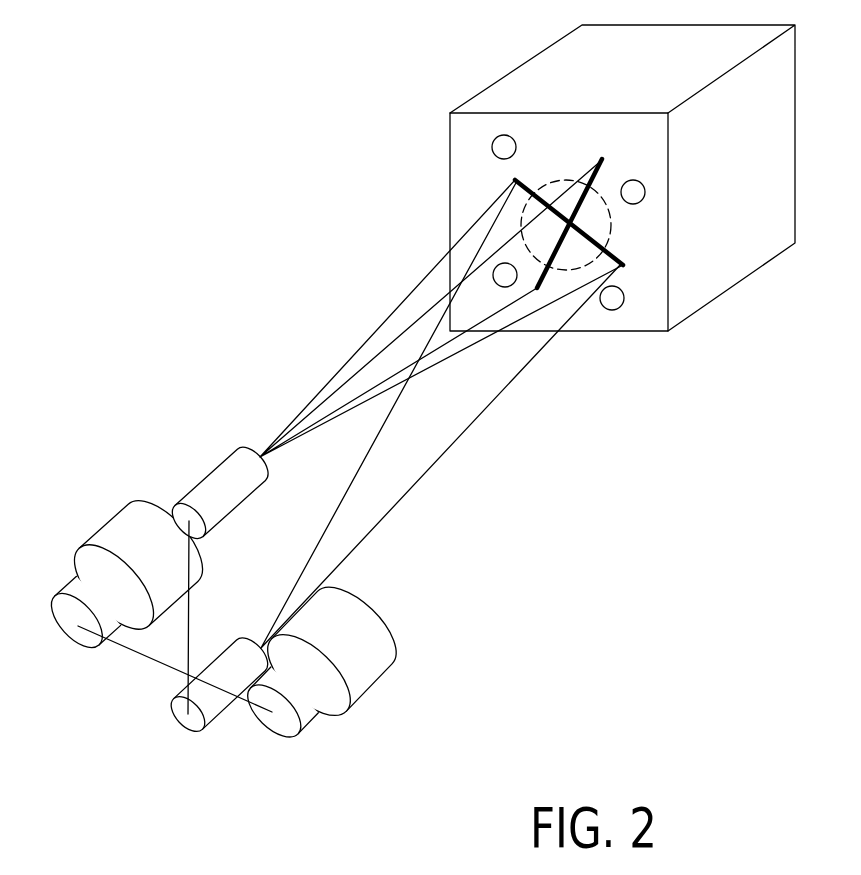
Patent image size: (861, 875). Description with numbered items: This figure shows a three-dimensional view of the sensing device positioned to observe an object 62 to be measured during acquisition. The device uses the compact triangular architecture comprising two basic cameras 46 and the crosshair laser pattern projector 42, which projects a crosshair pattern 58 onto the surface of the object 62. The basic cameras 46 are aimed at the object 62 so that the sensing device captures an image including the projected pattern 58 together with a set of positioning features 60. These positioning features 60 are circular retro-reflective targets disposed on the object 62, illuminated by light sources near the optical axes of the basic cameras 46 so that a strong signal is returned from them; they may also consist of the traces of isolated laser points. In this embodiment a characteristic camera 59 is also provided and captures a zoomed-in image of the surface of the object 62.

The crosshair laser pattern projector 42 is at (198, 480).
The basic cameras 46 is at (98, 528).
The cross-hair target mark 58 is at (602, 158).
The characteristic camera 59 is at (183, 732).
The retro-reflective targets 60 is at (504, 135).
The object 62 is at (730, 292).